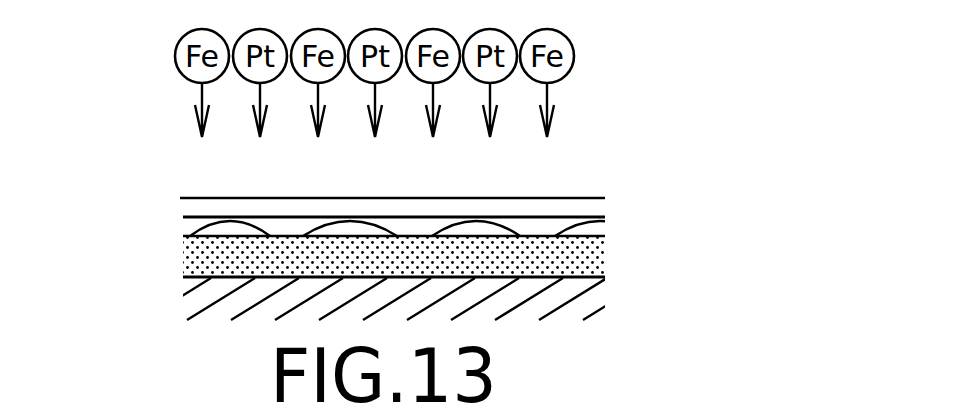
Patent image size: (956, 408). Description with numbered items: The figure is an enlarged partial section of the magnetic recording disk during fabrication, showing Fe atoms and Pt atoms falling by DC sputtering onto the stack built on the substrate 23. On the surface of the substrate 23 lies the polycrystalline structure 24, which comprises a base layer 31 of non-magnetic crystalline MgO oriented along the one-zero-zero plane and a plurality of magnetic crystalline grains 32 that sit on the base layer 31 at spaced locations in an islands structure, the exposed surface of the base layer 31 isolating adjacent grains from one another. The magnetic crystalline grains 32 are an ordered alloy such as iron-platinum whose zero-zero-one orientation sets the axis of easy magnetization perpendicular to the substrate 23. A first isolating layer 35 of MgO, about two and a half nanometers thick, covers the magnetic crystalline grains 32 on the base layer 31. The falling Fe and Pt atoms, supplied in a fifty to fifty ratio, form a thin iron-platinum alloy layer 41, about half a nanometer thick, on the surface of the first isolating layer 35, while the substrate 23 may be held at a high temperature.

The substrate 23 is at (587, 268).
The polycrystalline structure 24 is at (117, 160).
The base layer 31 is at (203, 237).
The magnetic crystalline grains 32 is at (222, 222).
The first isolating layer 35 is at (560, 218).
The Fe50Pt50 alloy layer 41 is at (510, 197).